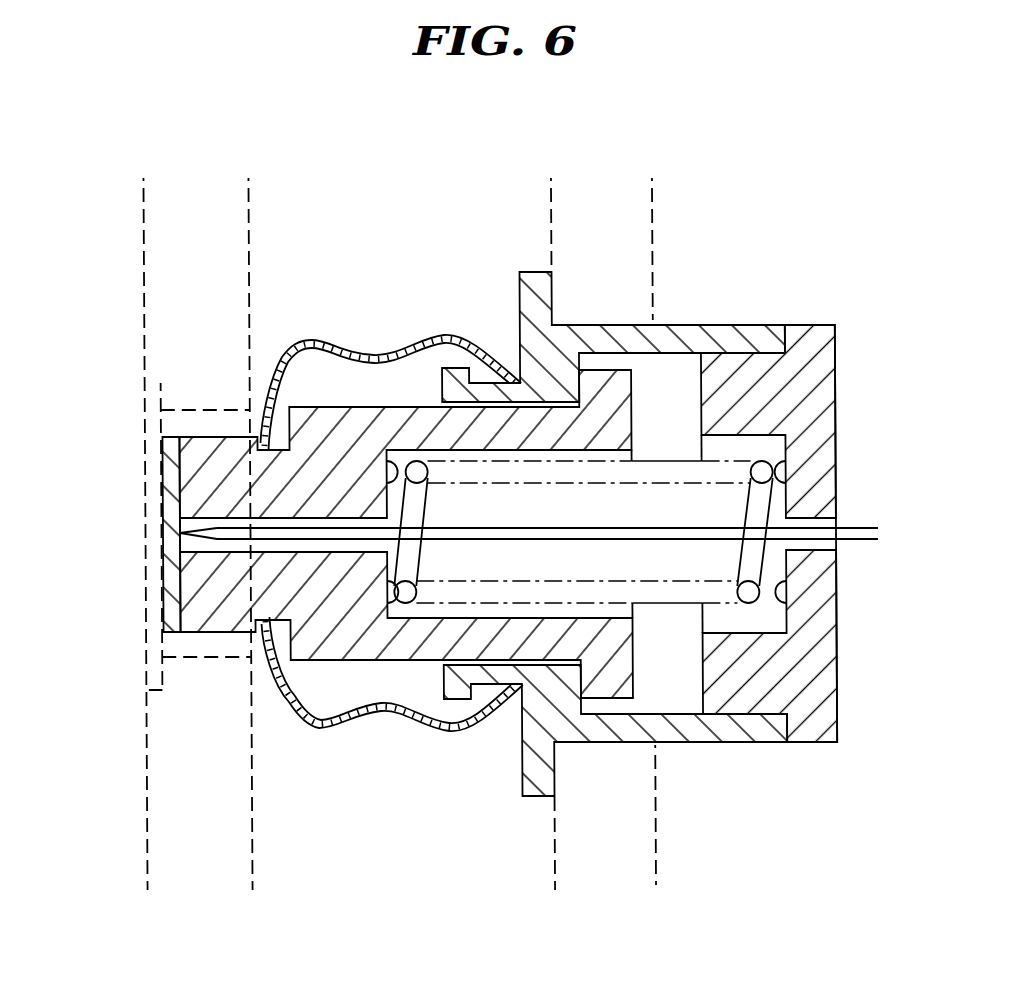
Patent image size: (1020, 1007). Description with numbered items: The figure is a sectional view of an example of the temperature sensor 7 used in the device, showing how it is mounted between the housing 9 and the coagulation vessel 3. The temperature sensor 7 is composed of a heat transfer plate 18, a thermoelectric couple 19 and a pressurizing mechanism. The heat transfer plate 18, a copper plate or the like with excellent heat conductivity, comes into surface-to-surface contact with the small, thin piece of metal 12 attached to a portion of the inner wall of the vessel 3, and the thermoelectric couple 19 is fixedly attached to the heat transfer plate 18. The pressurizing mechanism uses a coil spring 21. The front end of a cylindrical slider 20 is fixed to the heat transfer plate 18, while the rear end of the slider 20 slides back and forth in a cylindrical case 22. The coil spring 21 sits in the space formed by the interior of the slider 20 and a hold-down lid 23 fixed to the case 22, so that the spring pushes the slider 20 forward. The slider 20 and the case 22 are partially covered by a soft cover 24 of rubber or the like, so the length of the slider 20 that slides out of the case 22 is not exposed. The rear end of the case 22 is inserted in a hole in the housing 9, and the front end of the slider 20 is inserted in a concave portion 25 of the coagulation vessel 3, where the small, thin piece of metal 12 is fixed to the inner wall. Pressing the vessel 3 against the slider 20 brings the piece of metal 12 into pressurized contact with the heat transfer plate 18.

The coagulation vessel 3 is at (165, 241).
The temperature sensor 7 is at (827, 313).
The housing 9 is at (637, 225).
The small, thin piece of metal 12 is at (157, 416).
The heat transfer plate 18 is at (162, 486).
The thermoelectric couple 19 is at (215, 540).
The cylindrical slider 20 is at (212, 617).
The coil spring 21 is at (433, 592).
The cylindrical case 22 is at (610, 735).
The hold-down lid 23 is at (822, 660).
The soft cover 24 is at (450, 730).
The concave portion 25 is at (196, 423).